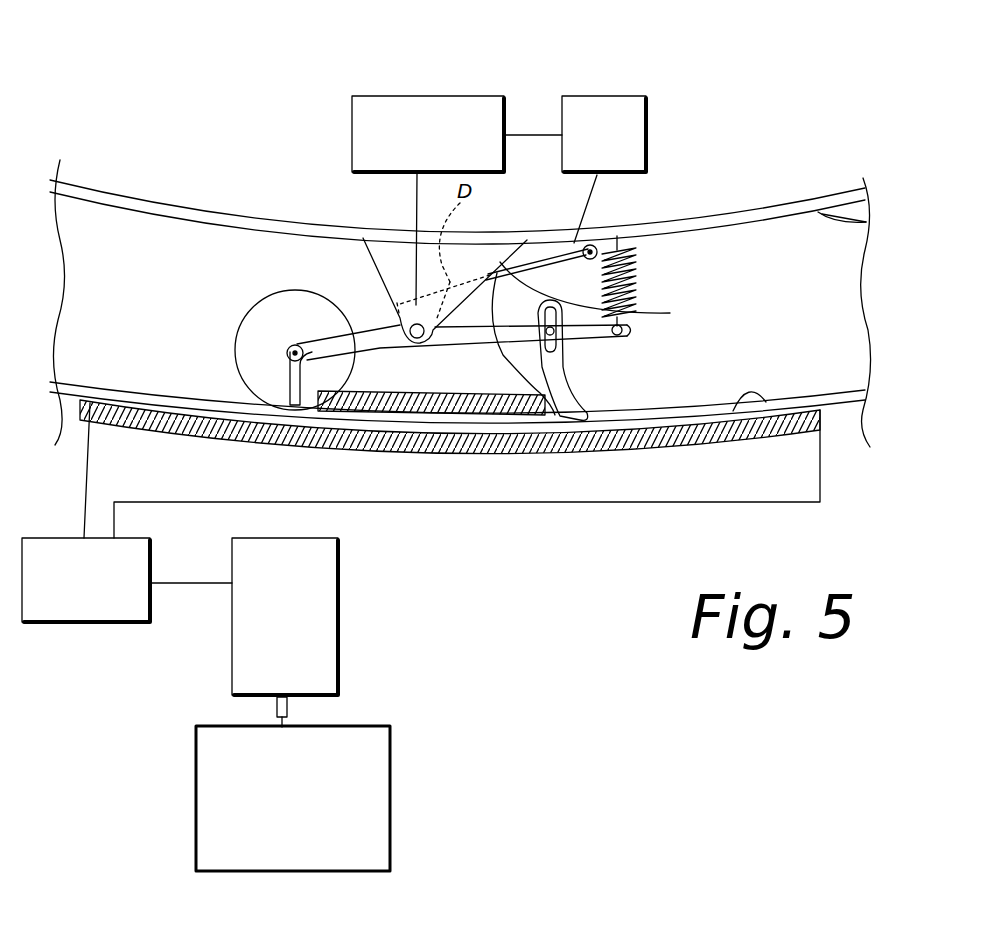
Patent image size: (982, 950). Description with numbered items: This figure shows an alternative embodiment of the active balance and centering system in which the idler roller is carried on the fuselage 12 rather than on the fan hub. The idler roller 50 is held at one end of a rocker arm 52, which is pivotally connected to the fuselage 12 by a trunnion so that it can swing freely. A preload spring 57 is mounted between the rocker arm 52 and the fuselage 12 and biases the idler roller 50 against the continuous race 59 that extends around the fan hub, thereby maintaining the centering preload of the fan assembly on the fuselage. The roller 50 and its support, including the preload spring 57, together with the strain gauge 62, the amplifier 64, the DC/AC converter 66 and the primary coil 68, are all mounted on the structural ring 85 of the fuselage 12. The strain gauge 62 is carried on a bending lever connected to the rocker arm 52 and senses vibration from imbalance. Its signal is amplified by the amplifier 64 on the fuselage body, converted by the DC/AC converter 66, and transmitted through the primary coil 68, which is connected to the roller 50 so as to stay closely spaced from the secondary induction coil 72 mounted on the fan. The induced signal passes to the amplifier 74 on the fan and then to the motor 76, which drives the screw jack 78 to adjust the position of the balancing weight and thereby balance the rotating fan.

The fuselage 12 is at (762, 212).
The idler roller 50 is at (253, 328).
The rocker arm 52 is at (513, 336).
The preload spring 57 is at (643, 273).
The continuous race 59 is at (766, 402).
The strain gauge 62 is at (633, 312).
The amplifier 64 is at (600, 95).
The DC/AC converter 66 is at (456, 96).
The primary coil 68 is at (395, 393).
The secondary induction coil 72 is at (573, 440).
The amplifier 74 is at (87, 608).
The motor 76 is at (330, 623).
The screw jack 78 is at (385, 838).
The structural ring 85 is at (870, 223).